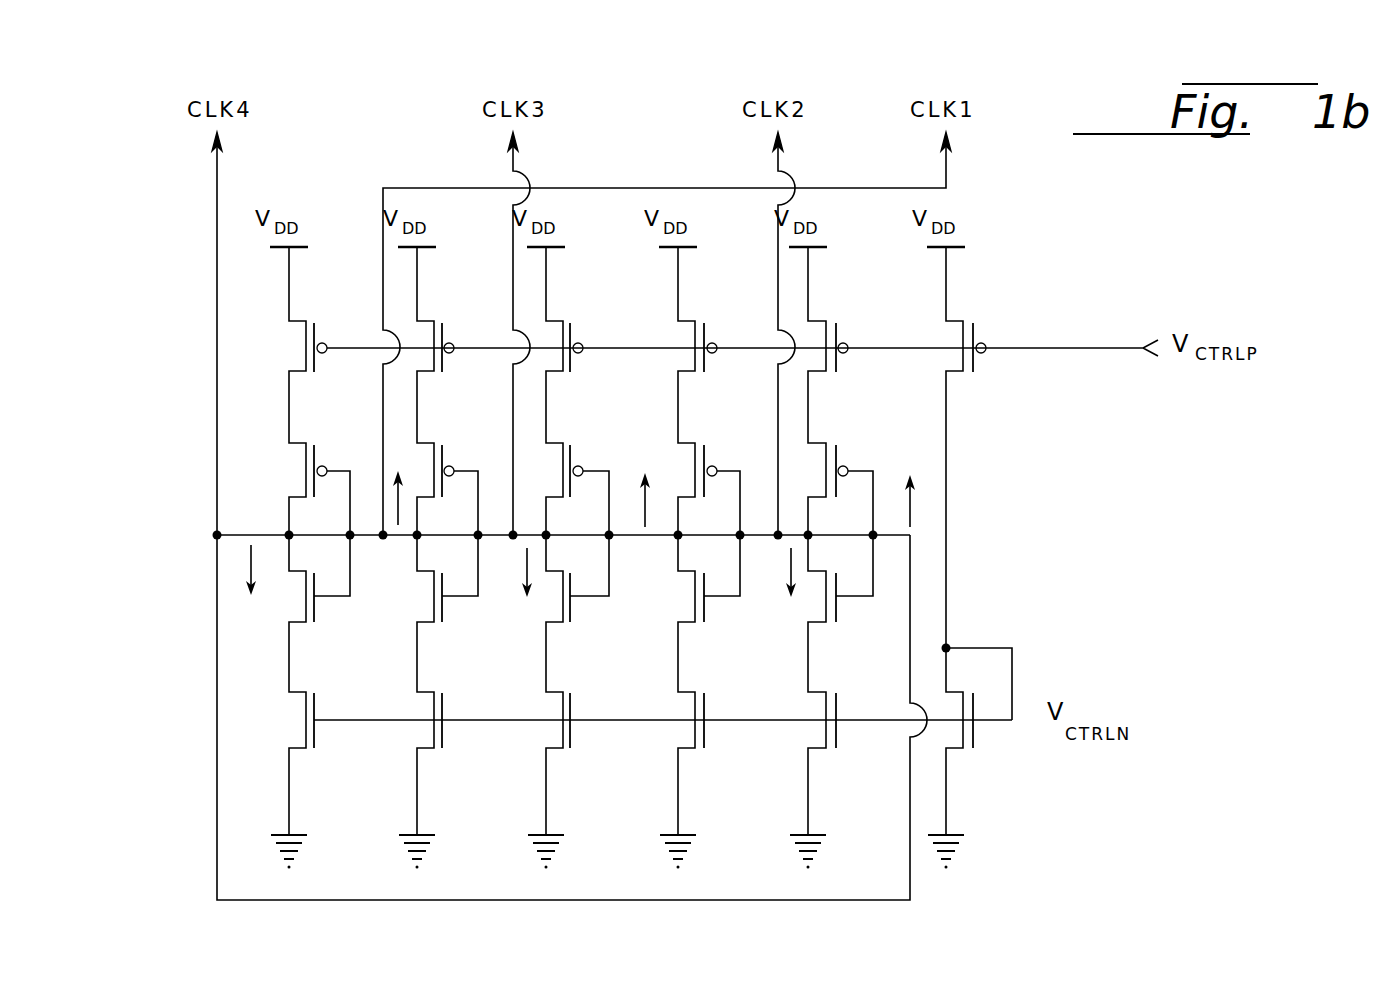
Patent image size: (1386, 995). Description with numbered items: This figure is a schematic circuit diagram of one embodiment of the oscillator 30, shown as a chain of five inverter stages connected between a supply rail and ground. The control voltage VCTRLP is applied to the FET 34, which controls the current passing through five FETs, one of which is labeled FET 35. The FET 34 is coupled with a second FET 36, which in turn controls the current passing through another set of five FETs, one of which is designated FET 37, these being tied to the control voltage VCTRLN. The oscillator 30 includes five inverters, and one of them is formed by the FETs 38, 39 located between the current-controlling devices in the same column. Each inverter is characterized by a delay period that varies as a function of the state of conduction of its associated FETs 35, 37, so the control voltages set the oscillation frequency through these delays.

The oscillator 30 is at (182, 716).
The FET 34 is at (962, 373).
The FET 35 is at (824, 372).
The second FET 36 is at (962, 749).
The FET 37 is at (824, 749).
The FET 38 is at (822, 498).
The FET 39 is at (824, 623).